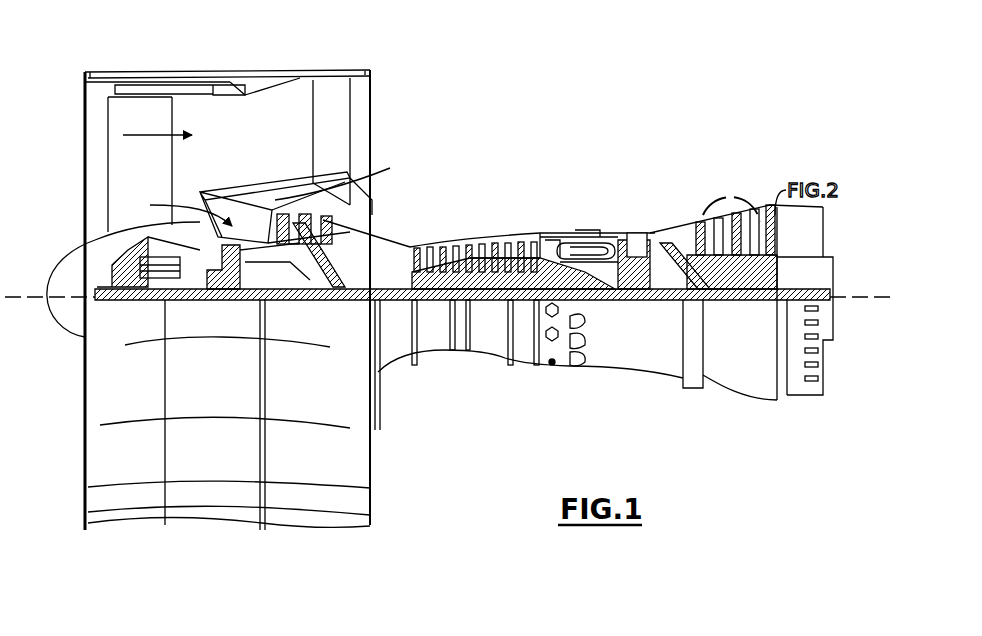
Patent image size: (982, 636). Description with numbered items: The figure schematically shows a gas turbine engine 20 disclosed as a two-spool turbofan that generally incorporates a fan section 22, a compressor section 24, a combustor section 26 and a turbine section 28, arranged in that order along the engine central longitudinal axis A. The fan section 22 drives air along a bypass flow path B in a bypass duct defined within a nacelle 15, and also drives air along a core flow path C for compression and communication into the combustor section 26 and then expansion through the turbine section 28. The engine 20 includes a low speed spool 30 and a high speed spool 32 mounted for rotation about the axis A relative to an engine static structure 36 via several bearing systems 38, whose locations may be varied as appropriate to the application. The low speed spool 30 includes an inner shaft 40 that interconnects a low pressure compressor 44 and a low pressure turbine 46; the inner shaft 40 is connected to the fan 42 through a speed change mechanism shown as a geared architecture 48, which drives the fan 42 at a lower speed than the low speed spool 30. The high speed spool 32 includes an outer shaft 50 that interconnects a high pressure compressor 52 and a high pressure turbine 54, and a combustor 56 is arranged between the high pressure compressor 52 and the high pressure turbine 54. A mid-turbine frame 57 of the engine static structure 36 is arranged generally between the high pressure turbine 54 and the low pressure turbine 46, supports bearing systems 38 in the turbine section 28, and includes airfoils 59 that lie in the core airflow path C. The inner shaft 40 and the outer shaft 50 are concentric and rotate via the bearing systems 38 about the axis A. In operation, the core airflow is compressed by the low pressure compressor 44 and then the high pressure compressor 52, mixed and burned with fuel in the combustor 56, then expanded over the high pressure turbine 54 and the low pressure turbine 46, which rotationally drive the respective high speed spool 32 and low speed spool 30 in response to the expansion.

The nacelle 15 is at (229, 82).
The gas turbine engine 20 is at (594, 110).
The fan section 22 is at (171, 58).
The compressor section 24 is at (414, 214).
The combustor section 26 is at (586, 213).
The turbine section 28 is at (702, 185).
The low speed spool 30 is at (492, 312).
The high speed spool 32 is at (528, 243).
The engine static structure 36 is at (525, 378).
The bearing systems 38 is at (335, 297).
The inner shaft 40 is at (392, 347).
The fan 42 is at (160, 177).
The low pressure compressor 44 is at (372, 175).
The low pressure turbine 46 is at (732, 205).
The geared architecture 48 is at (230, 292).
The outer shaft 50 is at (588, 302).
The high pressure compressor 52 is at (478, 247).
The high pressure turbine 54 is at (636, 232).
The combustor 56 is at (587, 243).
The mid-turbine frame 57 is at (665, 235).
The airfoils 59 is at (692, 265).